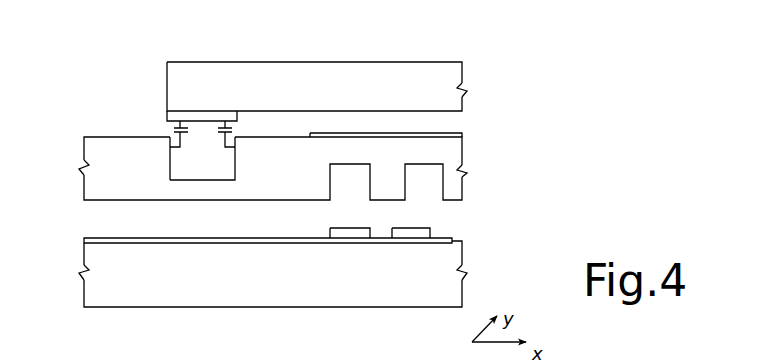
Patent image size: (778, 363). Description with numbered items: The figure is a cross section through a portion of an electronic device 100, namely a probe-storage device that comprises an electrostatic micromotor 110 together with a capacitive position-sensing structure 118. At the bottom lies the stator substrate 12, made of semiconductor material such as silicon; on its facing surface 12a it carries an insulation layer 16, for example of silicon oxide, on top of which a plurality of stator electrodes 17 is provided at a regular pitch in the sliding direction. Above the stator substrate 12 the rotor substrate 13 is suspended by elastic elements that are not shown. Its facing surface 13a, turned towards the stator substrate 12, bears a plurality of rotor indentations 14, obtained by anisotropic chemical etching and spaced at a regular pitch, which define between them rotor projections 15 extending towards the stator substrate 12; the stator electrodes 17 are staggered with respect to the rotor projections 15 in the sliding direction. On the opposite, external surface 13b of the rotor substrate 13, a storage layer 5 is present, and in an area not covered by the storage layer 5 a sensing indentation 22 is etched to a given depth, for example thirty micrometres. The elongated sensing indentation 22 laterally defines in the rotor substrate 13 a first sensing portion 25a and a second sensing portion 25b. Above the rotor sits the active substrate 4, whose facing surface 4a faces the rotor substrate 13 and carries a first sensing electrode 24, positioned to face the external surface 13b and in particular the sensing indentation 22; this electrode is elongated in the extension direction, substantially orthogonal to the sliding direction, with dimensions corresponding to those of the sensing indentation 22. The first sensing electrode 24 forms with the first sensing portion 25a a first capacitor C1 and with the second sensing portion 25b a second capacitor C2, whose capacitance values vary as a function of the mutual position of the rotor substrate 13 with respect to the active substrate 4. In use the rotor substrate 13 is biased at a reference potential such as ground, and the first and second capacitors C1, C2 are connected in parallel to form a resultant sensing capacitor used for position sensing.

The electronic device 100 is at (560, 84).
The electrostatic micromotor 110 is at (514, 215).
The position-sensing structure 118 is at (124, 97).
The active substrate 4 is at (452, 70).
The facing surface of the active substrate 4a is at (456, 116).
The storage layer 5 is at (455, 131).
The stator substrate 12 is at (107, 293).
The facing surface of the stator substrate 12a is at (456, 236).
The rotor substrate 13 is at (85, 158).
The facing surface of the rotor substrate 13a is at (91, 204).
The external surface of the rotor substrate 13b is at (93, 133).
The rotor indentations 14 is at (440, 186).
The rotor projections 15 is at (464, 170).
The insulation layer 16 is at (84, 240).
The stator electrodes 17 is at (357, 233).
The sensing indentation 22 is at (234, 165).
The first sensing electrode 24 is at (167, 117).
The first sensing portion 25a is at (137, 173).
The second sensing portion 25b is at (264, 172).
The first capacitor C1 is at (174, 130).
The second capacitor C2 is at (224, 130).